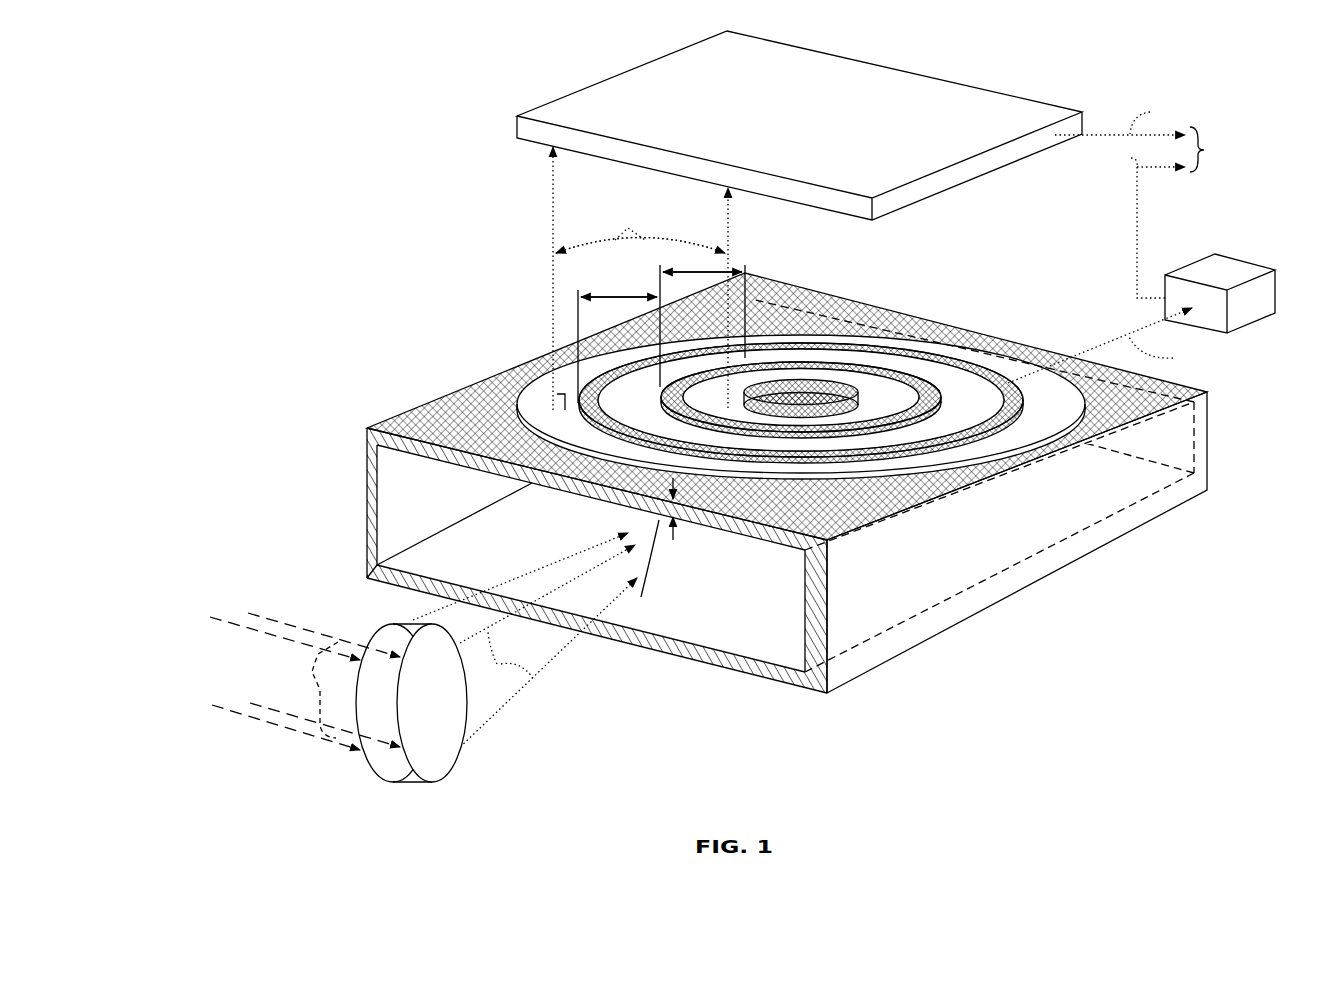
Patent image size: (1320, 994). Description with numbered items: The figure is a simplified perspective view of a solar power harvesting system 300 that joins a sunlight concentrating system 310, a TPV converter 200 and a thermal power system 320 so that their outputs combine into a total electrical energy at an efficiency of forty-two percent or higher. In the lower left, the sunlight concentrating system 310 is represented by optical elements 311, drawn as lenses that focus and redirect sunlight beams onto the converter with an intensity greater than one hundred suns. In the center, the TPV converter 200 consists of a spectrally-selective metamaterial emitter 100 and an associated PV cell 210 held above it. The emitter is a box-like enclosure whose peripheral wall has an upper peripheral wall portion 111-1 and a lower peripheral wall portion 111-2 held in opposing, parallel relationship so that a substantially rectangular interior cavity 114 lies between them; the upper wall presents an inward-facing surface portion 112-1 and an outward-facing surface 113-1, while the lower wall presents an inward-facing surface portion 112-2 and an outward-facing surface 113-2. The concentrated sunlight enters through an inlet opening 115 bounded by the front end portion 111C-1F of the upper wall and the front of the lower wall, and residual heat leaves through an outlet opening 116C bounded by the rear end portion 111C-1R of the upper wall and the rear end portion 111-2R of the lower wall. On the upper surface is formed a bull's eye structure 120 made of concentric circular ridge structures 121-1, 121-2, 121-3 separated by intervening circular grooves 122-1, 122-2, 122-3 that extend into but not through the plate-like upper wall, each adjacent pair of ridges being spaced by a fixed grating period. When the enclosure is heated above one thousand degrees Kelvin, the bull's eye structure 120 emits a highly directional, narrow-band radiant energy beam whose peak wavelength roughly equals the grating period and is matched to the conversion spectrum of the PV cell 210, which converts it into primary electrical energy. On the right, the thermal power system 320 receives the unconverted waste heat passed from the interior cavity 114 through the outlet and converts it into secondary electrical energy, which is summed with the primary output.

The solar power harvesting system 300 is at (315, 88).
The TPV converter 200 is at (520, 34).
The PV cell 210 is at (597, 83).
The spectrally-selective metamaterial emitter 100 is at (528, 327).
The upper peripheral wall portion 111-1 is at (443, 447).
The lower peripheral wall portion 111-2 is at (770, 567).
The front end portion of upper peripheral wall portion 111C-1F is at (866, 293).
The rear end portion of upper peripheral wall portion 111C-1R is at (303, 497).
The rear end portion of lower peripheral wall portion 111-2R is at (384, 580).
The inward-facing surface portion of upper wall portion 112-1 is at (468, 472).
The inward-facing surface portion of lower wall portion 112-2 is at (447, 567).
The outward-facing surface of upper wall portion 113-1 is at (455, 398).
The outward-facing surface of lower wall portion 113-2 is at (780, 687).
The interior cavity 114 is at (697, 646).
The inlet opening 115 is at (743, 640).
The outlet opening 116C is at (1185, 426).
The bull's eye structure 120 is at (788, 338).
The first concentric circular ridge structure 121-1 is at (818, 380).
The second concentric circular ridge structure 121-2 is at (933, 400).
The third concentric circular ridge structure 121-3 is at (1010, 385).
The first circular groove 122-1 is at (878, 395).
The second circular groove 122-2 is at (965, 403).
The third circular groove 122-3 is at (1048, 393).
The sunlight concentrating system 310 is at (340, 760).
The optical elements 311 is at (407, 777).
The thermal power system 320 is at (1192, 262).